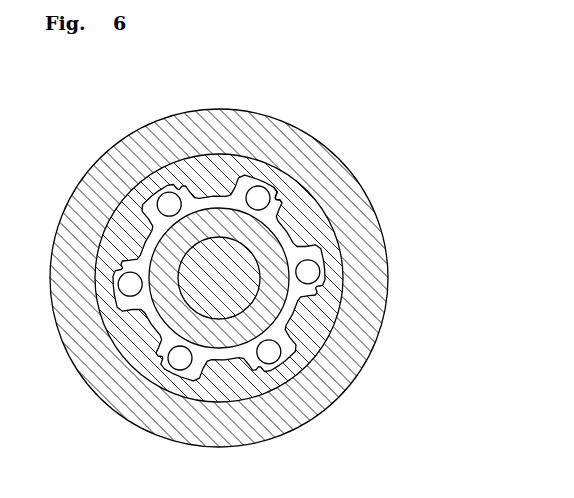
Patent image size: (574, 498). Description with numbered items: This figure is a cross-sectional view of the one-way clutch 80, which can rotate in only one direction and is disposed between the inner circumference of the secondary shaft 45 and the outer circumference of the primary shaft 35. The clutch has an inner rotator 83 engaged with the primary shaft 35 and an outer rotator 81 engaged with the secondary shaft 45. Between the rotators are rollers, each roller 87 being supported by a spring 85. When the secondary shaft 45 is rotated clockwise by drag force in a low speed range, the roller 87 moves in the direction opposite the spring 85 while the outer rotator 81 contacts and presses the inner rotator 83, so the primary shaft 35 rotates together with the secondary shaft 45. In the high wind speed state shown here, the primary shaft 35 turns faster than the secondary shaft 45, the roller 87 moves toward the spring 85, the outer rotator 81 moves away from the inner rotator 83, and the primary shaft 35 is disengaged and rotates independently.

The one-way clutch 80 is at (84, 105).
The outer rotator 81 is at (213, 167).
The roller 87 is at (262, 197).
The spring 85 is at (288, 183).
The secondary shaft 45 is at (360, 237).
The primary shaft 35 is at (202, 298).
The inner rotator 83 is at (223, 337).